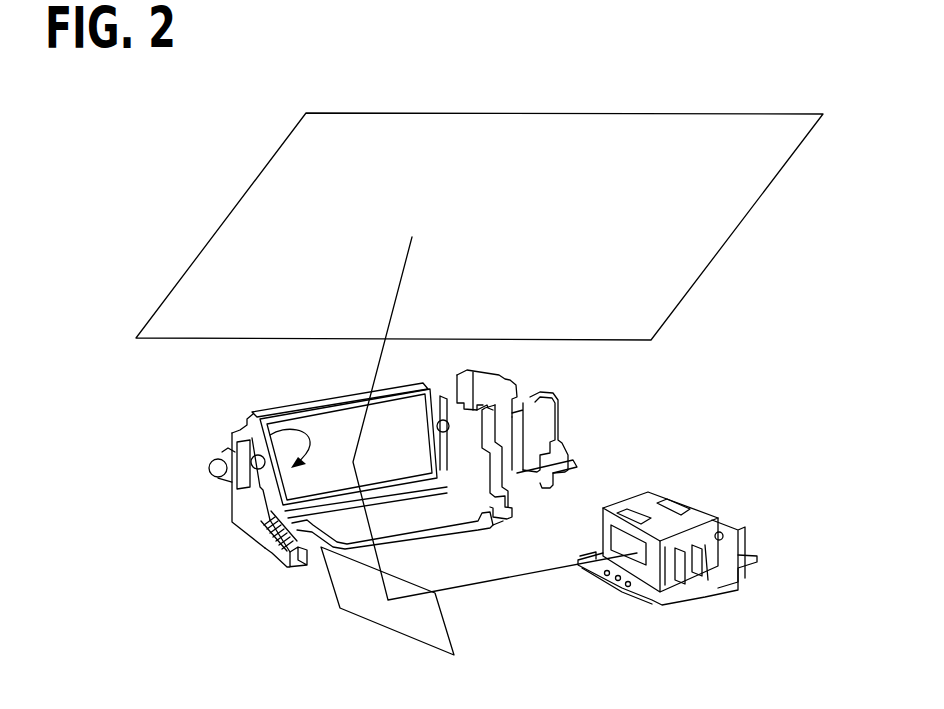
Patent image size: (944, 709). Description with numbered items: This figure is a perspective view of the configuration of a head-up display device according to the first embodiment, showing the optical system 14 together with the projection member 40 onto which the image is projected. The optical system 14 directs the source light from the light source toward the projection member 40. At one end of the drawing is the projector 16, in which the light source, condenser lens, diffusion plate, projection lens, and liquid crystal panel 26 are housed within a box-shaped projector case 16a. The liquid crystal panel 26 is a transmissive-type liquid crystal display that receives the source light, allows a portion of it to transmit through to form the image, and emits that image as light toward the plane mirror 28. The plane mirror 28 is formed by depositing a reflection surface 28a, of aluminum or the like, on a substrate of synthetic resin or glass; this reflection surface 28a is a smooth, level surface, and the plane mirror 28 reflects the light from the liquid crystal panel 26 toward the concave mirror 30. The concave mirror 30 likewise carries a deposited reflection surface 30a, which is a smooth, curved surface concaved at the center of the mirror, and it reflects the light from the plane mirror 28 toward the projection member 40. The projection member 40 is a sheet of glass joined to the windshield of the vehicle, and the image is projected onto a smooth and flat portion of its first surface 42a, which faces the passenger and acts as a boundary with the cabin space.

The optical system 14 is at (394, 536).
The projector 16 is at (667, 511).
The projector case 16a is at (658, 493).
The liquid crystal panel 26 is at (645, 563).
The plane mirror 28 is at (457, 657).
The reflection surface 28a is at (428, 632).
The concave mirror 30 is at (252, 412).
The reflection surface 30a is at (256, 460).
The projection member 40 is at (665, 113).
The first surface 42a is at (255, 231).